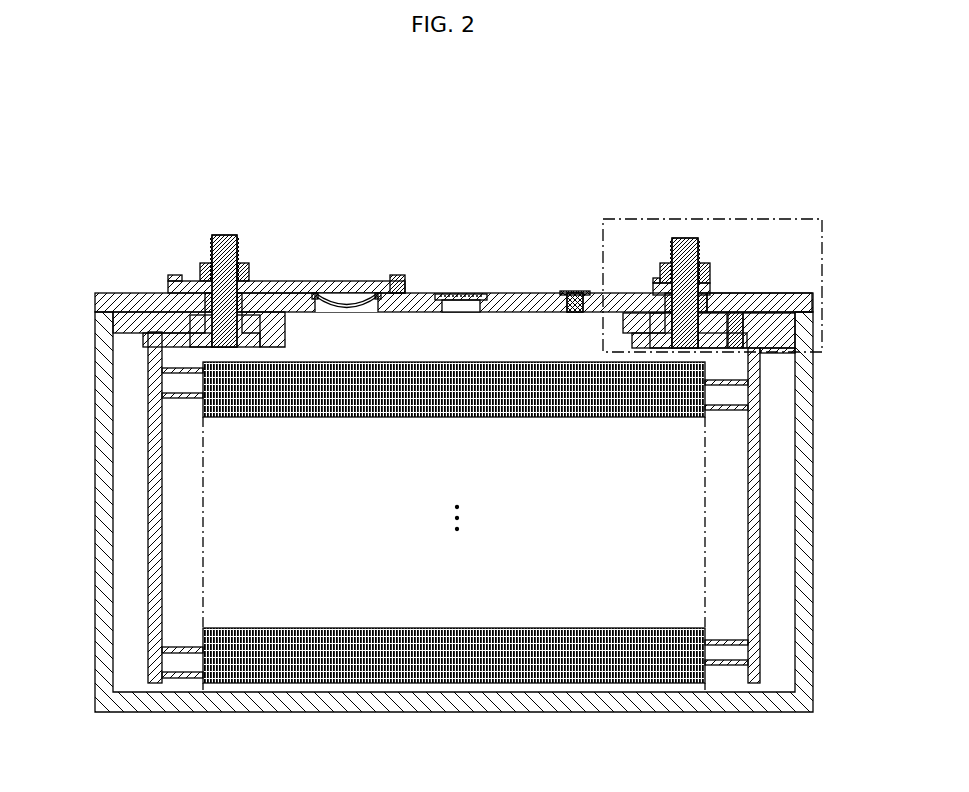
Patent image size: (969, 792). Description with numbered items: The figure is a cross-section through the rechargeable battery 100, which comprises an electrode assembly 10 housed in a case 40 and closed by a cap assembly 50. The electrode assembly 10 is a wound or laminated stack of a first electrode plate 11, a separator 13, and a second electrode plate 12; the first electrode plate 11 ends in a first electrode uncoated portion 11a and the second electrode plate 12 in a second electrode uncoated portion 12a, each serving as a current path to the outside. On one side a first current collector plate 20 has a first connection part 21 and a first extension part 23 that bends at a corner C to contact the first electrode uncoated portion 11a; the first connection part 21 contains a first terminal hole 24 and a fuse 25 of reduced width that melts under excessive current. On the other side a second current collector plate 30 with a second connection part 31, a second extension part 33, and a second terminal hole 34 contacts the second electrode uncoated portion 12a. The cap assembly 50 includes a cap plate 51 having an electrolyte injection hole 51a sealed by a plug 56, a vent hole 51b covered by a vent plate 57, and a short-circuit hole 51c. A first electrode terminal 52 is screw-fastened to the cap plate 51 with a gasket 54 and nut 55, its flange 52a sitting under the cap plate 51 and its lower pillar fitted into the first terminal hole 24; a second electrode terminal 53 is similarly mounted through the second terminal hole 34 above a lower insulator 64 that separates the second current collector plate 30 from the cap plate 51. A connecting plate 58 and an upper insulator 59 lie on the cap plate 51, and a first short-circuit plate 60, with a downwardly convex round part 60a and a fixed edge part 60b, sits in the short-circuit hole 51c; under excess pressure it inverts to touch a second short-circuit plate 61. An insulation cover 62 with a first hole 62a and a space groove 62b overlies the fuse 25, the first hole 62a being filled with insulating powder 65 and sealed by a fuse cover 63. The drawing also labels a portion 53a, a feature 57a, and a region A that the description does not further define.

The electrode assembly 10 is at (548, 700).
The first electrode plate 11 is at (623, 678).
The first electrode uncoated portion 11a is at (727, 665).
The second electrode plate 12 is at (320, 688).
The second electrode uncoated portion 12a is at (181, 680).
The separator 13 is at (470, 688).
The first current collector plate 20 is at (760, 497).
The first connection part 21 is at (735, 330).
The first extension part 23 is at (760, 548).
The first terminal hole 24 is at (720, 393).
The fuse 25 is at (797, 313).
The second current collector plate 30 is at (140, 452).
The second connection part 31 is at (173, 337).
The second extension part 33 is at (152, 530).
The second terminal hole 34 is at (150, 362).
The case 40 is at (807, 452).
The cap assembly 50 is at (535, 203).
The cap plate 51 is at (512, 298).
The electrolyte injection hole 51a is at (580, 312).
The vent hole 51b is at (455, 312).
The short-circuit hole 51c is at (360, 312).
The first electrode terminal 52 is at (683, 240).
The flange 52a is at (632, 335).
The second electrode terminal 53 is at (226, 240).
The first terminal flange 53a is at (280, 330).
The gasket 54 is at (188, 283).
The nut 55 is at (243, 265).
The plug 56 is at (573, 292).
The vent plate 57 is at (480, 295).
The notch 57a is at (455, 295).
The connecting plate 58 is at (718, 296).
The upper insulator 59 is at (400, 276).
The first short-circuit plate 60 is at (376, 224).
The round part 60a is at (340, 297).
The edge part 60b is at (358, 297).
The second short-circuit plate 61 is at (290, 282).
The insulation cover 62 is at (797, 327).
The first hole 62a is at (765, 320).
The space groove 62b is at (787, 352).
The fuse cover 63 is at (737, 318).
The lower insulator 64 is at (120, 330).
The insulating powder 65 is at (732, 373).
The rechargeable battery 100 is at (788, 201).
The region A is at (822, 219).
The corner C is at (125, 300).